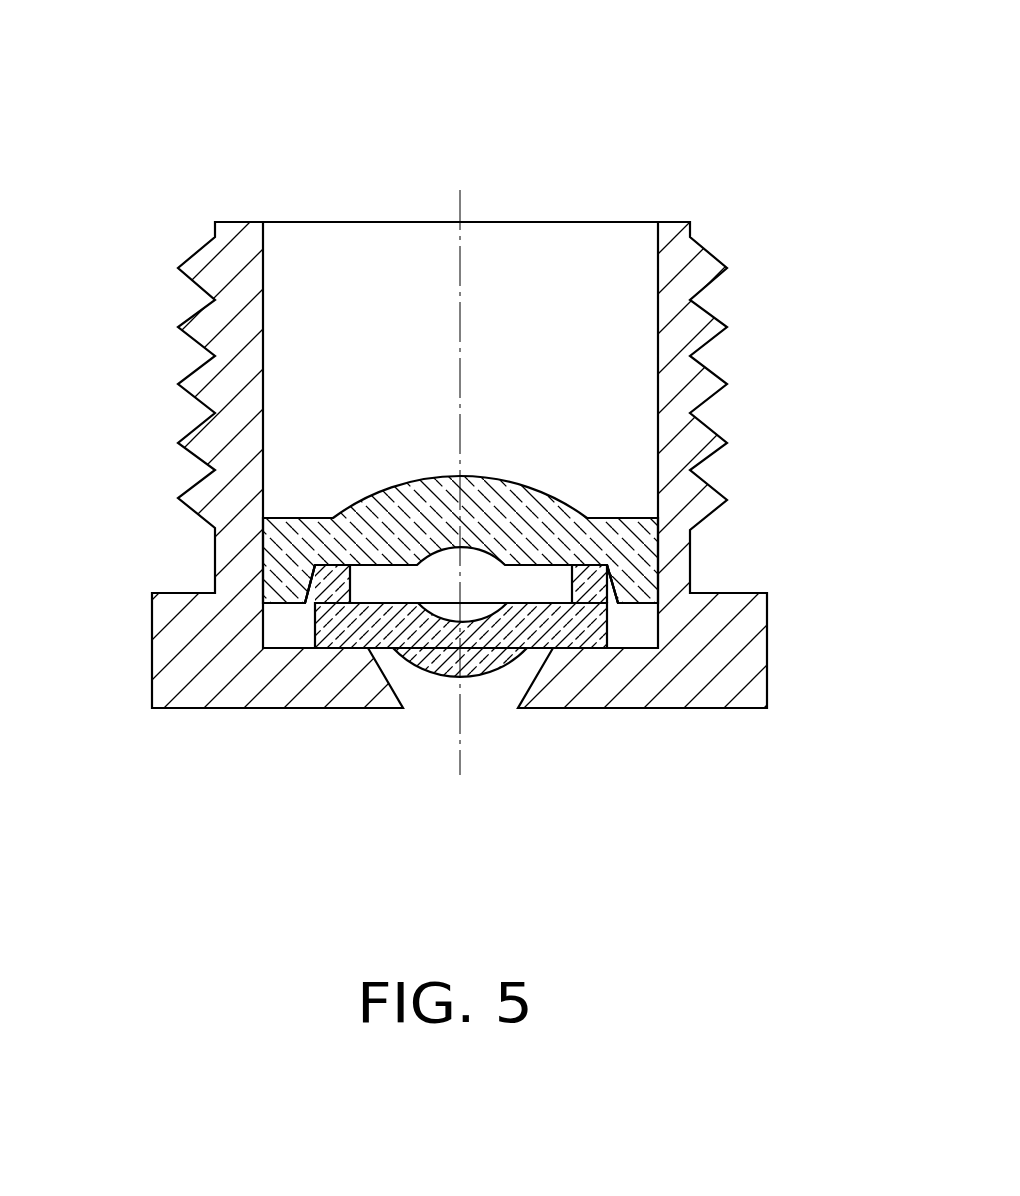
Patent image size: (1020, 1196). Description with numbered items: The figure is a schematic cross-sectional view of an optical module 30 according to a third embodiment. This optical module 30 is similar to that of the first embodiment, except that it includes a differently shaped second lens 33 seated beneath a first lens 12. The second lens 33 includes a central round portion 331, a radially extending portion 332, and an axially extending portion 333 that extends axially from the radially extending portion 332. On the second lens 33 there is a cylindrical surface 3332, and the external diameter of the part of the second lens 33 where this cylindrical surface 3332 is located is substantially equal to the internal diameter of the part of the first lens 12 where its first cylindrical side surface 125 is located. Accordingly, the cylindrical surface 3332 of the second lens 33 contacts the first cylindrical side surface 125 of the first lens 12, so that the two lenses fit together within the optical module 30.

The optical module 30 is at (514, 75).
The first lens 12 is at (555, 478).
The first cylindrical side surface 125 is at (313, 583).
The second lens 33 is at (582, 651).
The central round portion 331 is at (432, 658).
The radially extending portion 332 is at (563, 625).
The axially extending portion 333 is at (590, 570).
The cylindrical surface 3332 is at (617, 597).